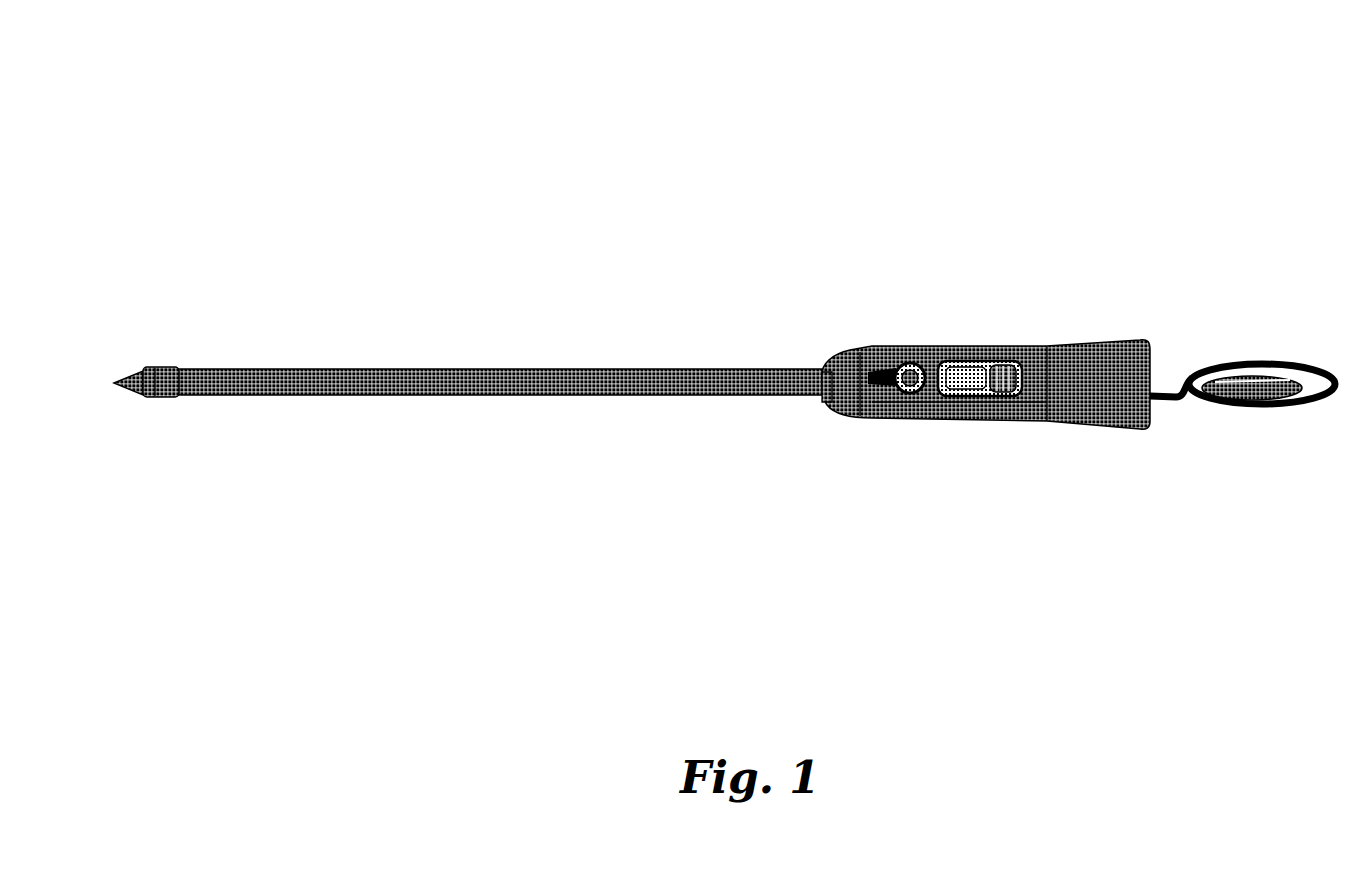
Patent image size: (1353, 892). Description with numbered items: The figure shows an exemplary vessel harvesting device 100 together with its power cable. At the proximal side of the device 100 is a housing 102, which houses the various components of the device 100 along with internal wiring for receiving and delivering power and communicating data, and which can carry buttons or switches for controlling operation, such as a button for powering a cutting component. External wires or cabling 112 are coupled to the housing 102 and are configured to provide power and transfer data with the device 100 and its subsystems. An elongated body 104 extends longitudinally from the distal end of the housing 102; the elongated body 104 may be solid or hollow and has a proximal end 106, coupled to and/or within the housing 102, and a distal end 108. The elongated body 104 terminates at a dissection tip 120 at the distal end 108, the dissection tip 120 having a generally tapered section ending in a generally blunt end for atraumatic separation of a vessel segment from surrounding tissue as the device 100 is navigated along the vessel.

The vessel harvesting device 100 is at (163, 162).
The housing 102 is at (932, 343).
The elongated body 104 is at (658, 368).
The proximal end 106 is at (800, 343).
The distal end 108 is at (200, 363).
The cable 112 is at (1233, 400).
The dissection tip 120 is at (133, 378).